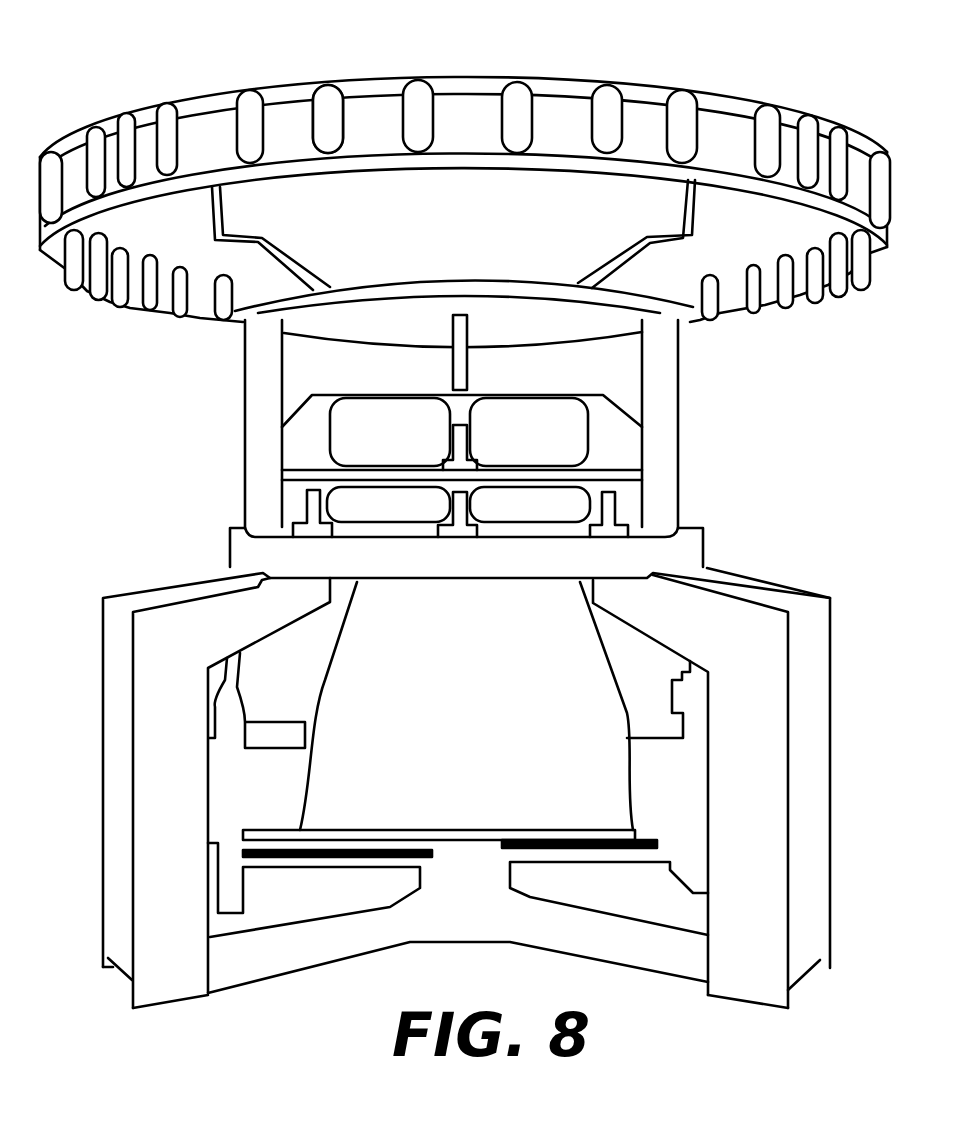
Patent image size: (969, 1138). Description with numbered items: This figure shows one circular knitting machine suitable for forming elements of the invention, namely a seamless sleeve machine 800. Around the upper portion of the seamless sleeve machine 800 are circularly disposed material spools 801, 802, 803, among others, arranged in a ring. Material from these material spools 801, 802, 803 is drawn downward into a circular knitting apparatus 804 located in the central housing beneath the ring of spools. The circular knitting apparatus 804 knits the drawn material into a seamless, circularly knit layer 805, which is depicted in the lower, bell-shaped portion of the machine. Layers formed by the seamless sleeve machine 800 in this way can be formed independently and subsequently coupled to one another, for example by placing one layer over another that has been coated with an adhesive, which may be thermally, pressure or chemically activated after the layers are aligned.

The seamless sleeve machine 800 is at (148, 515).
The material spool 801 is at (252, 107).
The material spool 802 is at (327, 97).
The material spool 803 is at (413, 97).
The circular knitting apparatus 804 is at (522, 444).
The seamless, circularly knit layer 805 is at (477, 715).